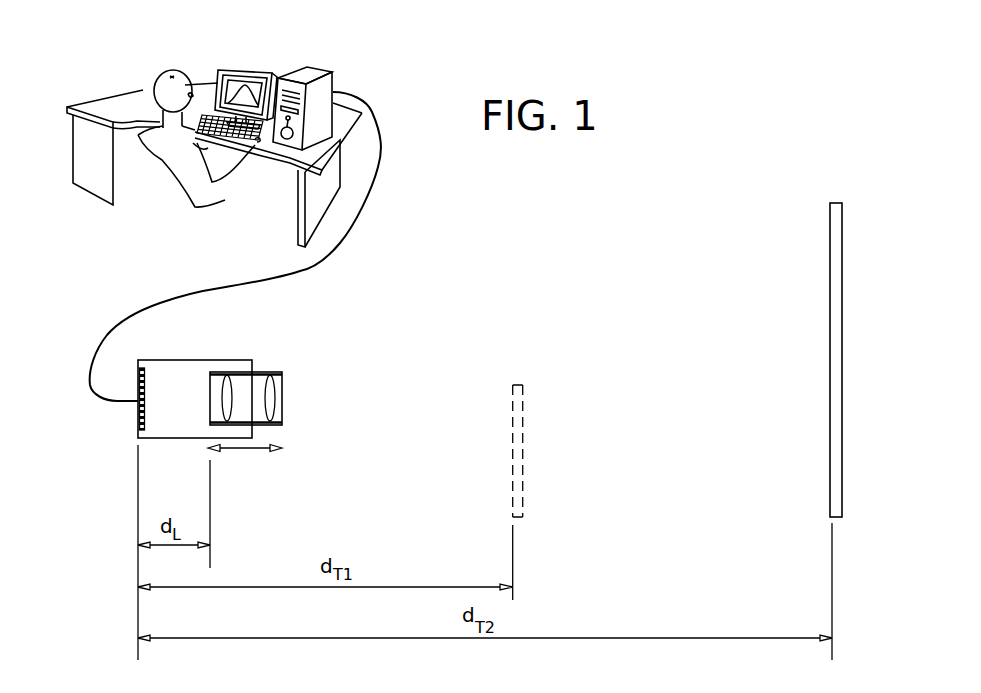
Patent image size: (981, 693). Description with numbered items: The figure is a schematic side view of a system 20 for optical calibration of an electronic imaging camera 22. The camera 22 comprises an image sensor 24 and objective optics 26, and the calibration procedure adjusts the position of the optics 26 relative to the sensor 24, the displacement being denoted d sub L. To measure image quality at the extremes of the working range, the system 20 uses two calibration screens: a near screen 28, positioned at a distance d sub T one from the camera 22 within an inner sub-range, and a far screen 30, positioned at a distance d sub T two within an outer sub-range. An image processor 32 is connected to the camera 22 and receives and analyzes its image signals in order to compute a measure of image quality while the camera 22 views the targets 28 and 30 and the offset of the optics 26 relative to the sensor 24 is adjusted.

The system for optical calibration 20 is at (757, 165).
The electronic imaging camera 22 is at (207, 360).
The image sensor 24 is at (145, 375).
The objective optics 26 is at (272, 372).
The near screen 28 is at (523, 387).
The far screen 30 is at (830, 238).
The image processor 32 is at (322, 74).